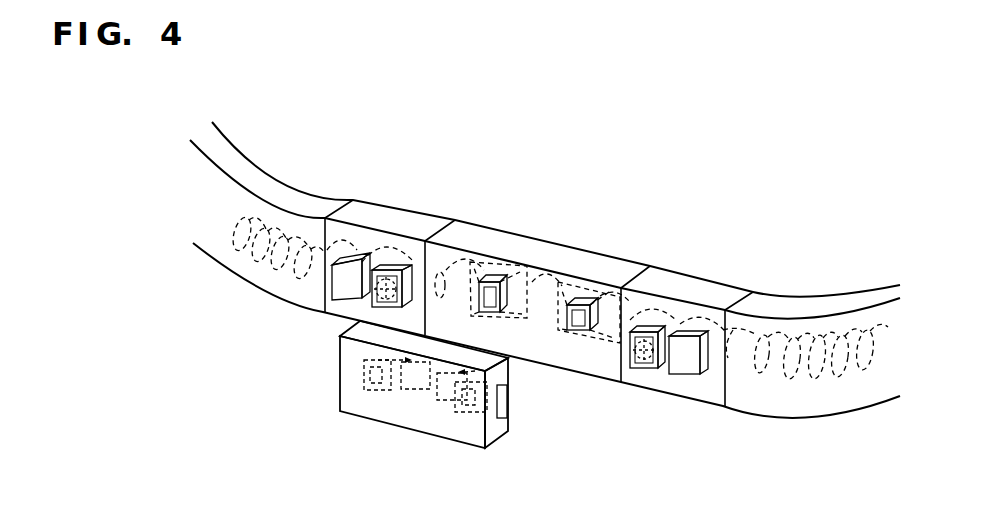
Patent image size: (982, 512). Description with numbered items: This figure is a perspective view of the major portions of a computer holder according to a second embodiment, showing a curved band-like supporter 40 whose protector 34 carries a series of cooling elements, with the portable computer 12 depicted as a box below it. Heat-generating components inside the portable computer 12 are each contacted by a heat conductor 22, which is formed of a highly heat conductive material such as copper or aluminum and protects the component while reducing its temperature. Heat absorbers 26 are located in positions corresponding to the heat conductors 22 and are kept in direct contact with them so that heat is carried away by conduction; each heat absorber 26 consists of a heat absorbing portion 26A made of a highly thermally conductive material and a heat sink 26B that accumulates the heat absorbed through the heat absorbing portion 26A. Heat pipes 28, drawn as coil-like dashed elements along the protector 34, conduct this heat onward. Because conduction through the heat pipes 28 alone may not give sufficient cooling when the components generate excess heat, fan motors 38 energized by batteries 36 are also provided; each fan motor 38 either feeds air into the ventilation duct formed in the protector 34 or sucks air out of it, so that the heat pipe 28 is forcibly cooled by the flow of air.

The portable computer 12 is at (424, 409).
The heat conductor 22 is at (373, 388).
The heat absorber 26 is at (605, 298).
The heat absorbing portion 26A is at (486, 284).
The heat sink 26B is at (520, 258).
The heat pipe 28 is at (263, 215).
The protector 34 is at (815, 398).
The battery 36 is at (343, 272).
The fan motor 38 is at (381, 268).
The supporter 40 is at (840, 287).